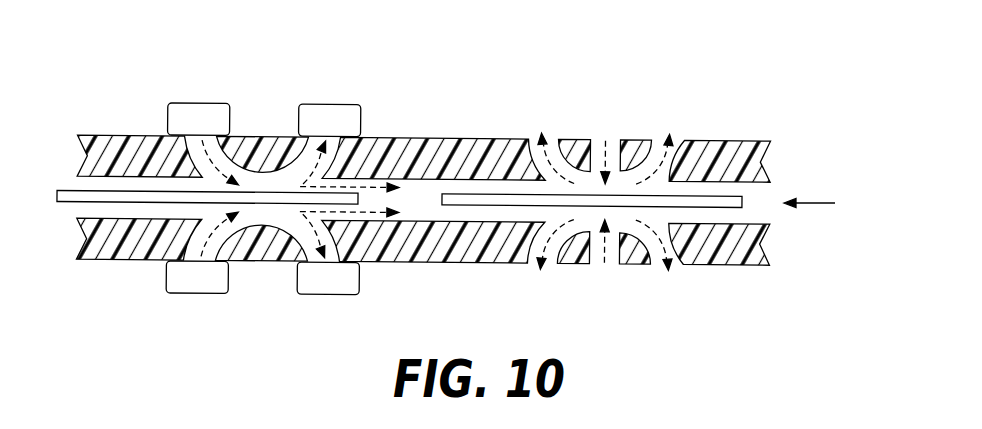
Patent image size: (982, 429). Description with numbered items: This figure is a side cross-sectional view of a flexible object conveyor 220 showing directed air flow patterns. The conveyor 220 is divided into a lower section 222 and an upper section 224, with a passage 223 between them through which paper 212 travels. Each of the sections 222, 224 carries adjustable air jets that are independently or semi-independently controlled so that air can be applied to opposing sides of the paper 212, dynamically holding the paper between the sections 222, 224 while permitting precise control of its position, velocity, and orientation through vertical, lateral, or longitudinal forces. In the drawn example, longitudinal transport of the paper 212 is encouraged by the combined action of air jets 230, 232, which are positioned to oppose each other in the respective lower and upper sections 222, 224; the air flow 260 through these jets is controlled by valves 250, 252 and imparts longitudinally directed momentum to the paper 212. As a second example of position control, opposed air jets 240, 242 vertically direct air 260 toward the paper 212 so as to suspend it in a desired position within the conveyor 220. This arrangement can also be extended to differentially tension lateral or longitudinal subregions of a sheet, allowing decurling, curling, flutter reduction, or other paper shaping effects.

The flexible object conveyor 220 is at (150, 51).
The paper 212 is at (340, 199).
The lower section 222 is at (758, 253).
The passage 223 is at (829, 202).
The upper section 224 is at (762, 168).
The air jet 230 is at (268, 292).
The air jet 232 is at (264, 104).
The opposed air jet 240 is at (611, 106).
The opposed air jet 242 is at (610, 293).
The valve 250 is at (213, 128).
The valve 252 is at (344, 128).
The air flow 260 is at (318, 160).